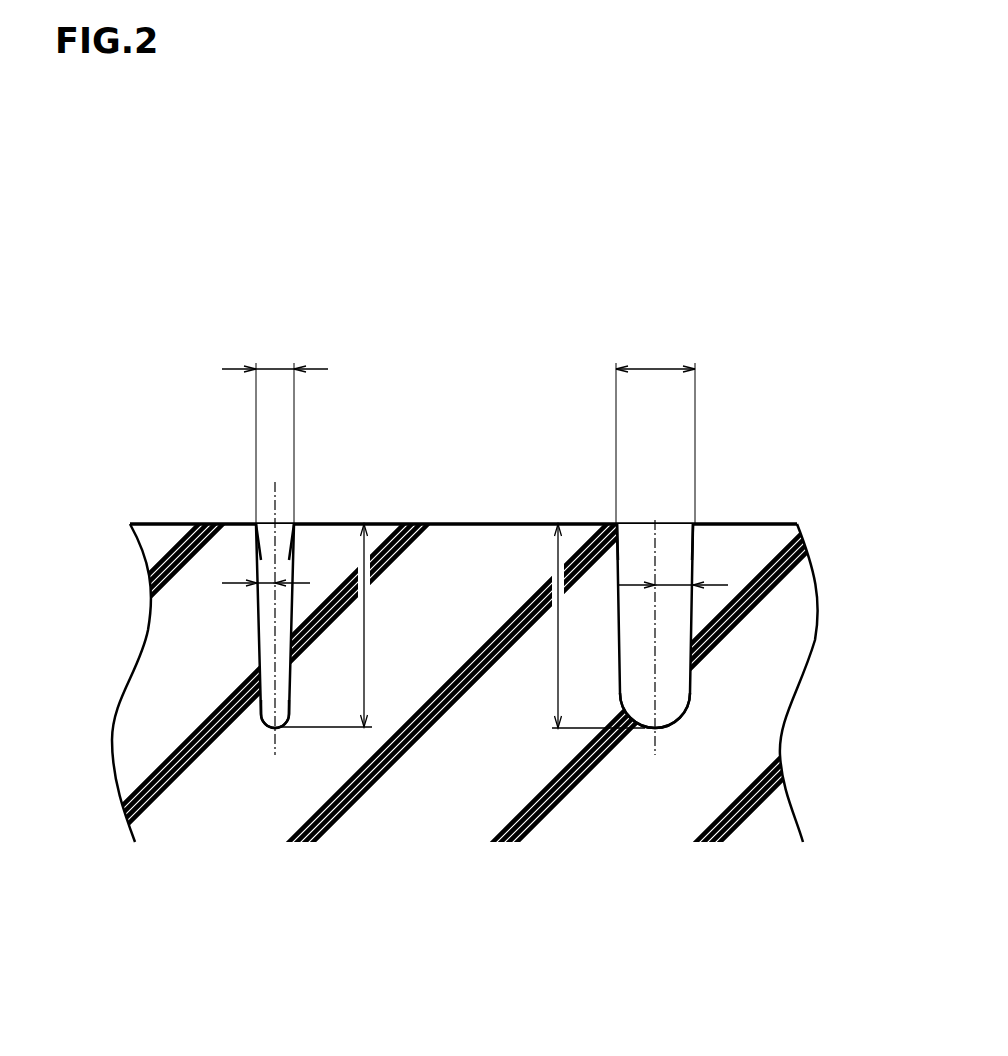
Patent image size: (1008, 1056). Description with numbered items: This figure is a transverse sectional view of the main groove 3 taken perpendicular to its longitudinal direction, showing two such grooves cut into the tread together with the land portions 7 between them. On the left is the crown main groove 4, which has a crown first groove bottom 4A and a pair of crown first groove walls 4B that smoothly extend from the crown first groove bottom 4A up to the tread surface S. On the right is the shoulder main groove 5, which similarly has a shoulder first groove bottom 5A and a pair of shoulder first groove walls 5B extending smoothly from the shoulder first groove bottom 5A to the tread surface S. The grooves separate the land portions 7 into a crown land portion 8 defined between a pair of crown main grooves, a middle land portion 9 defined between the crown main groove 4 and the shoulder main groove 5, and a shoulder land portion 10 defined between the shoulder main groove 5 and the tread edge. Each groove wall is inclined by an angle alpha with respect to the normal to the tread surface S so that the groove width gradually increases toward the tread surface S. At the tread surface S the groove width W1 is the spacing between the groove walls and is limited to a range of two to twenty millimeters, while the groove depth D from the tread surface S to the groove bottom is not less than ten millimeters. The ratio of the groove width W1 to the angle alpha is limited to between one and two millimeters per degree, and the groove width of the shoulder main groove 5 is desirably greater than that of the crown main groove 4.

The main groove 3 is at (464, 539).
The crown main groove 4 is at (277, 498).
The shoulder main groove 5 is at (648, 515).
The crown first groove bottom 4A is at (266, 715).
The shoulder first groove bottom 5A is at (668, 722).
The crown first groove wall 4B is at (262, 543).
The shoulder first groove wall 5B is at (630, 543).
The land portion 7 is at (504, 650).
The crown land portion 8 is at (504, 650).
The middle land portion 9 is at (504, 650).
The shoulder land portion 10 is at (792, 677).
The tread surface S is at (465, 522).
The groove width W1 is at (276, 424).
The groove depth D is at (327, 625).
The angle alpha is at (266, 567).